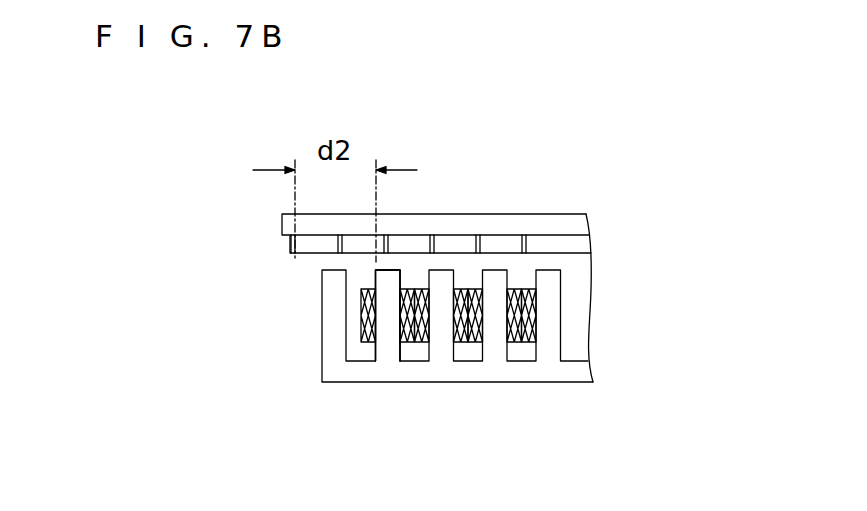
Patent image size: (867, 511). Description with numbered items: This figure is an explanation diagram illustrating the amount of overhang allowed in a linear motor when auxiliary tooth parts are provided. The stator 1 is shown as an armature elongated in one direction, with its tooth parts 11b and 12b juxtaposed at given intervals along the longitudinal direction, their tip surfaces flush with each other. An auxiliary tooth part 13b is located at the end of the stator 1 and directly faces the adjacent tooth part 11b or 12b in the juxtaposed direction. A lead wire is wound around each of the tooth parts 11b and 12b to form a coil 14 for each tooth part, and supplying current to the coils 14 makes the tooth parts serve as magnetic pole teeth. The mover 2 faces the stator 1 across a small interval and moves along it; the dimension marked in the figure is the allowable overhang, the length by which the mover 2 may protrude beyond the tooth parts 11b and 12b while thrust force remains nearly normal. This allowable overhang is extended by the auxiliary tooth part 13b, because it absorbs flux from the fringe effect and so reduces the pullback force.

The stator 1 is at (399, 293).
The mover 2 is at (533, 212).
The tooth part 11b is at (393, 268).
The tooth part 12b is at (430, 192).
The auxiliary tooth part 13b is at (322, 323).
The coil 14 is at (368, 343).